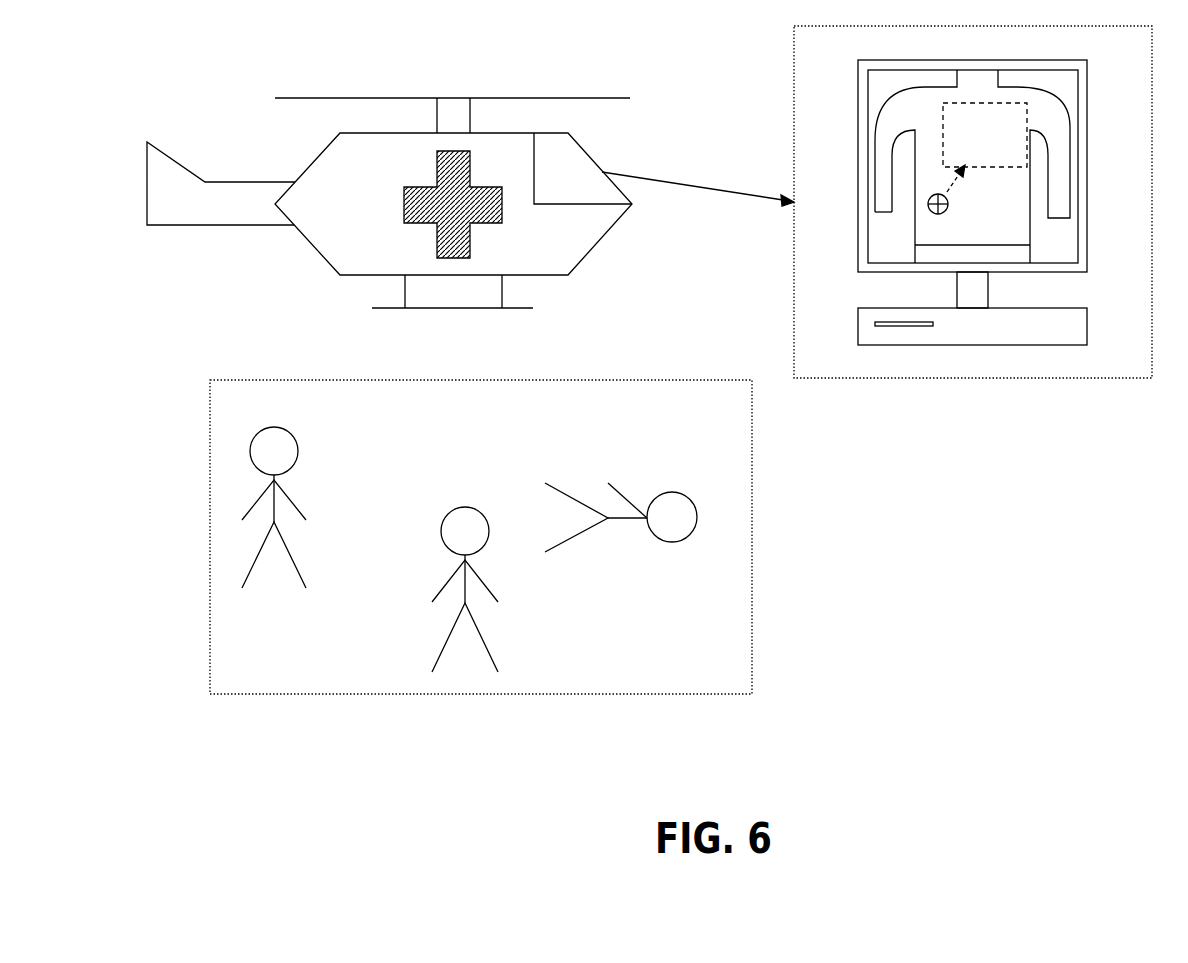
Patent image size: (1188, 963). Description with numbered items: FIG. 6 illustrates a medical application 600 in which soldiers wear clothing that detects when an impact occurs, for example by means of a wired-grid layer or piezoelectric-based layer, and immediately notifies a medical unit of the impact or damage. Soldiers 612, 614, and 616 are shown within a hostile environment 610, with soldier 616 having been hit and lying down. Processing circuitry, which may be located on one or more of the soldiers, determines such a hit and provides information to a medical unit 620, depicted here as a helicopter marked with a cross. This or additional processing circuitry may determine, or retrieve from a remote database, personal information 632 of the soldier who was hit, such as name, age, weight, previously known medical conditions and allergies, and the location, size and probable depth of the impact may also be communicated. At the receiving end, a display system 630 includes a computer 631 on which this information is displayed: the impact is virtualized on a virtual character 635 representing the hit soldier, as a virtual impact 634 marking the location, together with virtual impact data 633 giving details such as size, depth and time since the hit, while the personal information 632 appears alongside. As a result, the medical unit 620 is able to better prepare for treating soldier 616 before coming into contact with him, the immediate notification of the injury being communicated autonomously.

The medical application 600 is at (1139, 495).
The hostile environment 610 is at (338, 379).
The soldier 612 is at (275, 431).
The soldier 614 is at (464, 500).
The soldier 616 is at (666, 493).
The medical unit 620 is at (454, 106).
The remote display system 630 is at (793, 97).
The computer 631 is at (875, 61).
The personal information 632 is at (875, 98).
The virtual impact data 633 is at (1025, 107).
The virtual impact 634 is at (932, 197).
The virtual character 635 is at (916, 222).